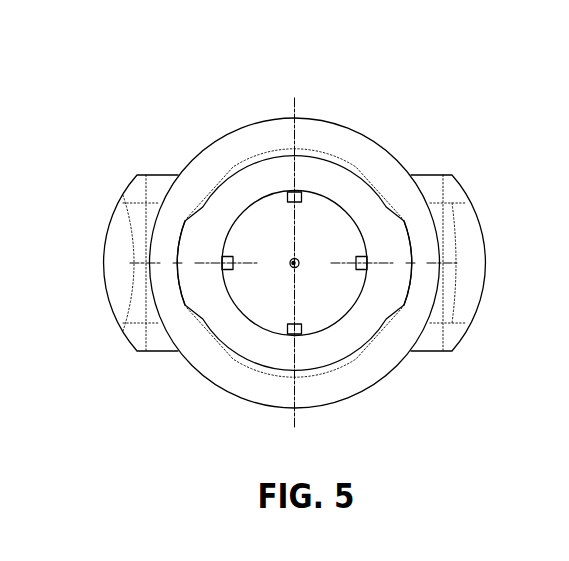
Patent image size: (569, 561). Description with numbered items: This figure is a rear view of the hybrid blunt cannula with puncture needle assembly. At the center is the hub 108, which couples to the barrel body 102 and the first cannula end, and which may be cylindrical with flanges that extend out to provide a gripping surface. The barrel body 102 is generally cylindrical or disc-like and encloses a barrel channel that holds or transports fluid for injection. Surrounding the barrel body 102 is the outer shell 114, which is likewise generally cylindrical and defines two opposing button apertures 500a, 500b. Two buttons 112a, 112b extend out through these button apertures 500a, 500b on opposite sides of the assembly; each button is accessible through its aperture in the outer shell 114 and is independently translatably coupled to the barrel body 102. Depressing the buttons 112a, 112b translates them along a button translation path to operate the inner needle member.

The barrel body 102 is at (342, 172).
The hub 108 is at (350, 217).
The button 112a is at (458, 187).
The button 112b is at (145, 187).
The outer shell 114 is at (237, 126).
The button aperture 500a is at (181, 286).
The button aperture 500b is at (408, 288).